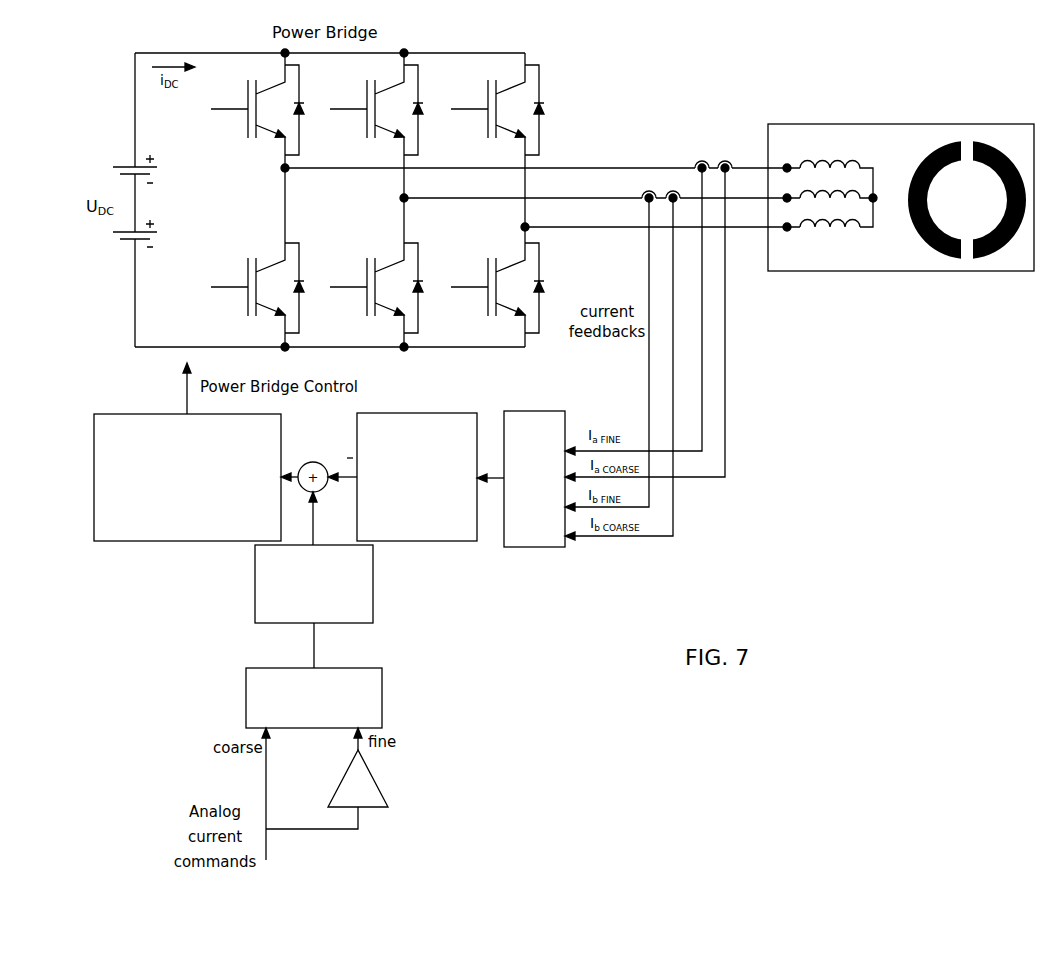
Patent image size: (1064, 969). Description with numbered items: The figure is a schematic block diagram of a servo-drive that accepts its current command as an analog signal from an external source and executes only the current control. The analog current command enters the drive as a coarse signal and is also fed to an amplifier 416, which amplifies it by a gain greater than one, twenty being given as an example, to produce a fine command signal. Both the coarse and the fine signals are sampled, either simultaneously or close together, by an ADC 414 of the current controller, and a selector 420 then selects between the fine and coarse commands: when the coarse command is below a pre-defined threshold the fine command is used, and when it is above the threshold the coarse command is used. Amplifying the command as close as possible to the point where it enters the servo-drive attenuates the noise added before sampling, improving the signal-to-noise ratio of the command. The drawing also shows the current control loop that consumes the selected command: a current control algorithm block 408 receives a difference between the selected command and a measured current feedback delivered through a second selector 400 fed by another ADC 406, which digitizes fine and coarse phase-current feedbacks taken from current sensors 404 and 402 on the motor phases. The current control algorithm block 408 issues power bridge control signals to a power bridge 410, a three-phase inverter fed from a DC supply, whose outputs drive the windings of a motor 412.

The selector 400 is at (432, 523).
The coarse current sensors 402 is at (725, 160).
The fine current sensors 404 is at (702, 160).
The analog-to-digital converter 406 is at (531, 532).
The current control algorithm 408 is at (168, 532).
The power bridge 410 is at (530, 98).
The motor 412 is at (858, 133).
The ADC 414 is at (378, 703).
The amplifier 416 is at (378, 793).
The selector 420 is at (372, 602).